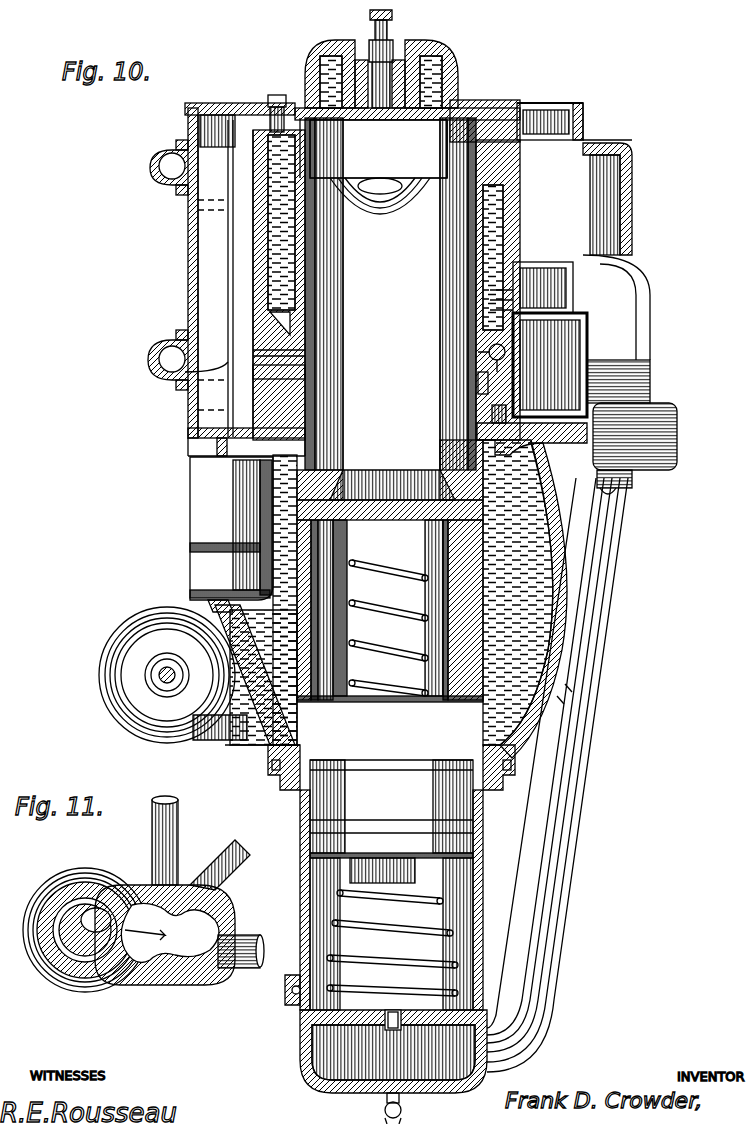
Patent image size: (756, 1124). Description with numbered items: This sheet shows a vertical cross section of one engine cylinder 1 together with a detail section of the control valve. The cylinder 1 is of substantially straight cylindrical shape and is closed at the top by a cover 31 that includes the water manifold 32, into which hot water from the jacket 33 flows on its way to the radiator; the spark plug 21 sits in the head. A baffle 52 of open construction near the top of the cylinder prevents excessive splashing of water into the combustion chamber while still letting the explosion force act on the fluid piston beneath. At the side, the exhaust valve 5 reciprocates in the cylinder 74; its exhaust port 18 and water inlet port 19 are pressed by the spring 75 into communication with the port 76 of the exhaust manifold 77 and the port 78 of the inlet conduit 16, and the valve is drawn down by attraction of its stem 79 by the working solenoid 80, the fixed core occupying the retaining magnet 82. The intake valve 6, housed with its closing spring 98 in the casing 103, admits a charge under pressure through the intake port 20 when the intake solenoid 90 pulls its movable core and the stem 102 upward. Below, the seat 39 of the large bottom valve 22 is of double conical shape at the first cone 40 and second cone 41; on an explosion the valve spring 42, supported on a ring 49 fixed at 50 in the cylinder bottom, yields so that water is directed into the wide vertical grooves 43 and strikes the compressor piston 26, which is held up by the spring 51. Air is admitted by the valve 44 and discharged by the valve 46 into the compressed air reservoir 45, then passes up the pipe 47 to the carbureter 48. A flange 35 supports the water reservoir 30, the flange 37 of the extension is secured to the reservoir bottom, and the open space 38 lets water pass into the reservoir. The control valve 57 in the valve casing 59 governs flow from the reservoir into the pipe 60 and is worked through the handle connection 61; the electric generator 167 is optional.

In FIG. 10, the spark plug 21 is at (392, 44).
In FIG. 10, the water manifold 32 is at (448, 50).
In FIG. 10, the cover 31 is at (455, 98).
In FIG. 10, the spring 98 is at (552, 118).
In FIG. 10, the casing 103 is at (588, 114).
In FIG. 10, the intake valve 6 is at (606, 142).
In FIG. 10, the intake port 20 is at (636, 160).
In FIG. 10, the exhaust valve 5 is at (212, 243).
In FIG. 10, the cylinder 74 is at (190, 262).
In FIG. 10, the baffle 52 is at (222, 224).
In FIG. 10, the exhaust port 18 is at (200, 207).
In FIG. 10, the inlet port 19 is at (200, 408).
In FIG. 10, the jacket 33 is at (250, 287).
In FIG. 10, the exhaust manifold 77 is at (158, 165).
In FIG. 10, the port 76 is at (168, 190).
In FIG. 10, the conduit 16 is at (170, 348).
In FIG. 10, the port 78 is at (186, 370).
In FIG. 10, the spring 75 is at (190, 430).
In FIG. 10, the stem 79 is at (200, 448).
In FIG. 10, the working solenoid 80 is at (190, 491).
In FIG. 10, the retaining magnet 82 is at (196, 554).
In FIG. 10, the vertical grooves 43 is at (210, 606).
In FIG. 10, the electric generator 167 is at (135, 645).
In FIG. 10, the seat 39 is at (500, 472).
In FIG. 10, the first cone 40 is at (520, 462).
In FIG. 10, the bottom valve 22 is at (490, 482).
In FIG. 10, the second cone 41 is at (470, 512).
In FIG. 10, the water reservoir 30 is at (462, 522).
In FIG. 10, the valve spring 42 is at (400, 596).
In FIG. 10, the cylinder 1 is at (478, 383).
In FIG. 10, the flange 35 is at (500, 416).
In FIG. 10, the intake solenoid 90 is at (590, 335).
In FIG. 10, the stem 102 is at (602, 282).
In FIG. 10, the carbureter 48 is at (680, 445).
In FIG. 10, the pipe 47 is at (560, 905).
In FIG. 10, the open space 38 is at (556, 733).
In FIG. 10, the ring 49 is at (568, 688).
In FIG. 10, the fixing point 50 is at (560, 700).
In FIG. 10, the flange 37 is at (512, 776).
In FIG. 10, the compressor piston 26 is at (490, 802).
In FIG. 10, the spring 51 is at (452, 921).
In FIG. 10, the valve 44 is at (292, 995).
In FIG. 10, the valve 46 is at (393, 1051).
In FIG. 10, the compressed air reservoir 45 is at (335, 1090).
In FIG. 11, the control valve 57 is at (52, 966).
In FIG. 11, the valve casing 59 is at (112, 975).
In FIG. 11, the handle connection 61 is at (168, 816).
In FIG. 11, the pipe 60 is at (242, 968).